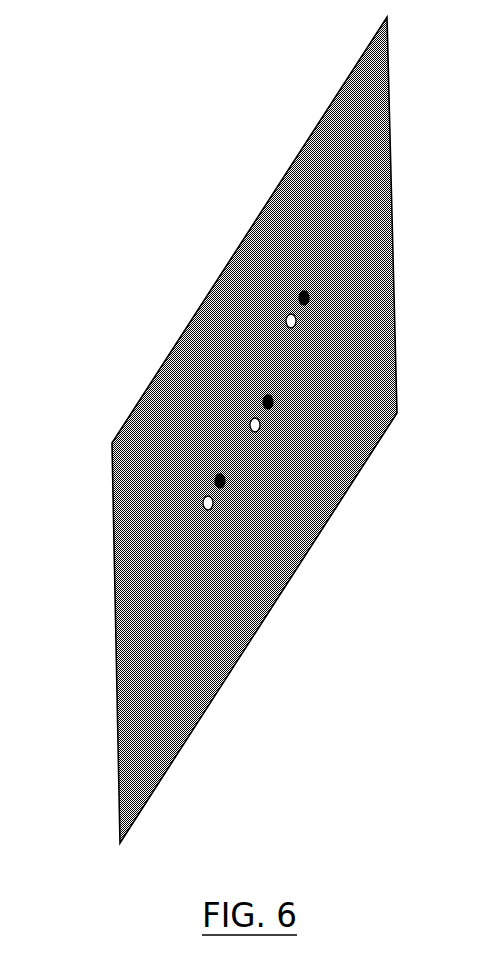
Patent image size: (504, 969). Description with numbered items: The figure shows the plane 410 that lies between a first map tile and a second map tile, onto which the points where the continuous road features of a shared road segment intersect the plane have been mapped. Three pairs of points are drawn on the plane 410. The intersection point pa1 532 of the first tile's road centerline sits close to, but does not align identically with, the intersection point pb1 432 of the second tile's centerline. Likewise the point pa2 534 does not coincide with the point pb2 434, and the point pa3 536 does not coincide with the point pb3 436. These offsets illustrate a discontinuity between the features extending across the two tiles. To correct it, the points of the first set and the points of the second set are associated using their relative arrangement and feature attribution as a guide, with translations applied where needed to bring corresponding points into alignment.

The plane 410 is at (254, 430).
The intersection point pa3 534 is at (216, 286).
The intersection point pb3 434 is at (380, 268).
The intersection point pa1 532 is at (161, 401).
The intersection point pb1 432 is at (362, 376).
The intersection point pa2 536 is at (131, 560).
The intersection point pb2 436 is at (293, 524).